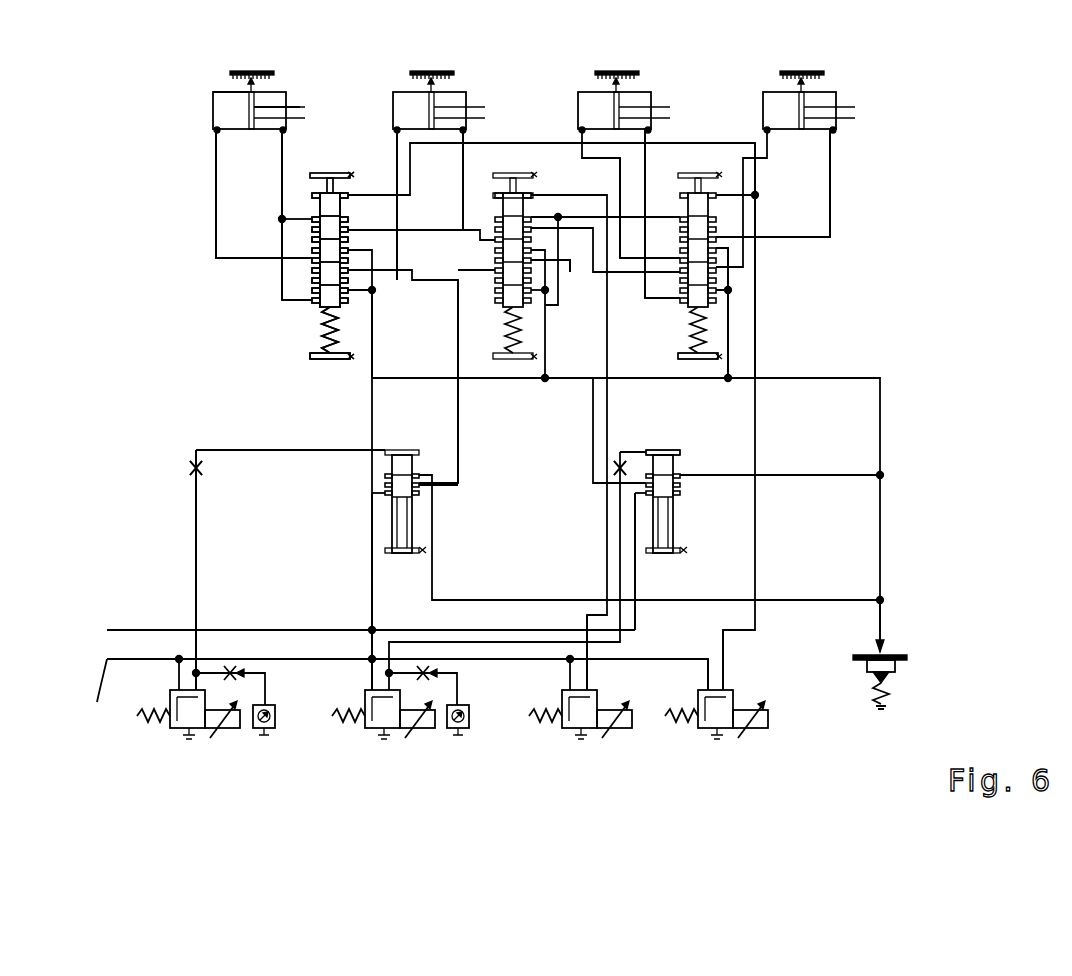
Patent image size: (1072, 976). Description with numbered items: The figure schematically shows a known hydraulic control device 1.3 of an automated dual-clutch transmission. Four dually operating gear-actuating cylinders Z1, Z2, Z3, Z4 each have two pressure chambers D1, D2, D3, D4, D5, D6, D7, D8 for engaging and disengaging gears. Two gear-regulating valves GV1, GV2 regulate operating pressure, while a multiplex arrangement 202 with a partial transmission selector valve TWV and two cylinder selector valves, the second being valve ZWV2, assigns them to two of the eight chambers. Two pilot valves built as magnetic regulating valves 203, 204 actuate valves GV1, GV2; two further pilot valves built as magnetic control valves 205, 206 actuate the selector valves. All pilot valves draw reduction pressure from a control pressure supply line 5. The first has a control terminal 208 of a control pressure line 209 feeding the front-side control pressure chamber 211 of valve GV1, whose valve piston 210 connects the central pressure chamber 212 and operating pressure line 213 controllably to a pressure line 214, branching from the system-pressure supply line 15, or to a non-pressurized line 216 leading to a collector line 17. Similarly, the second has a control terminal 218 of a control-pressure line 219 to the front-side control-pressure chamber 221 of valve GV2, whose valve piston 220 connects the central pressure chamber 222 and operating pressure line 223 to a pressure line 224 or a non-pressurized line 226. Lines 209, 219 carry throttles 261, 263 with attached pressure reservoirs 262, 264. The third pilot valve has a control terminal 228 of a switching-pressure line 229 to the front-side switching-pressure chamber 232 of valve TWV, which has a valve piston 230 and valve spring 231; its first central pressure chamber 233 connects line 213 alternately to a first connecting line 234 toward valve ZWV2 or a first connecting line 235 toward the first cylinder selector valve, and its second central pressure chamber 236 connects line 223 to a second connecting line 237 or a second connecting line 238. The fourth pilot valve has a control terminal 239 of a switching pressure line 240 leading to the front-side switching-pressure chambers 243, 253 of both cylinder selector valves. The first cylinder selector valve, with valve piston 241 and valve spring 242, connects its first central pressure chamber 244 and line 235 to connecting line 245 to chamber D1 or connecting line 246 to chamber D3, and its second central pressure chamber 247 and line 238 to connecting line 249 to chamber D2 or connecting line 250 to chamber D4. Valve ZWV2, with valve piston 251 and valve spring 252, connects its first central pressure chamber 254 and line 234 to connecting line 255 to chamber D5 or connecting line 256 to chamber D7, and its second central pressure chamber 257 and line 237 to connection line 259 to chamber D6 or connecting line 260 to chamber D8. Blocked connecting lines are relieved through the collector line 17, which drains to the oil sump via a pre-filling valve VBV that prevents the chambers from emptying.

The multiplex arrangement 202 is at (227, 304).
The hydraulic control device 1.3 is at (232, 338).
The partial transmission selector valve TWV is at (499, 265).
The second cylinder selector valve ZWV2 is at (675, 265).
The first gear-regulating valve GV1 is at (404, 516).
The second gear-regulating valve GV2 is at (666, 516).
The first gear-actuating cylinder Z1 is at (207, 87).
The second gear-actuating cylinder Z2 is at (400, 87).
The third gear-actuating cylinder Z3 is at (580, 88).
The fourth gear-actuating cylinder Z4 is at (766, 88).
The first pressure chamber of first gear-actuating cylinder D1 is at (233, 104).
The second pressure chamber of first gear-actuating cylinder D2 is at (270, 100).
The first pressure chamber of second gear-actuating cylinder D3 is at (414, 100).
The second pressure chamber of second gear-actuating cylinder D4 is at (450, 100).
The first pressure chamber of third gear-actuating cylinder D5 is at (595, 100).
The second pressure chamber of third gear-actuating cylinder D6 is at (620, 98).
The first pressure chamber of fourth gear-actuating cylinder D7 is at (788, 100).
The second pressure chamber of fourth gear-actuating cylinder D8 is at (826, 100).
The magnetic regulating valve 203 is at (173, 738).
The magnetic regulating valve 204 is at (368, 738).
The magnetic control valve 205 is at (565, 738).
The magnetic control valve 206 is at (701, 738).
The pressure reservoir 262 is at (259, 736).
The pressure reservoir 264 is at (450, 735).
The pre-filling valve VBV is at (900, 667).
The second central pressure chamber 247 is at (312, 197).
The first central pressure chamber 244 is at (312, 268).
The valve piston 241 is at (312, 293).
The valve spring 242 is at (318, 312).
The valve piston 230 is at (312, 352).
The valve spring 231 is at (372, 377).
The operating pressure line 213 is at (456, 383).
The front-side control pressure chamber 211 is at (456, 408).
The central pressure chamber 212 is at (387, 452).
The throttle 261 is at (190, 470).
The valve piston 210 is at (400, 500).
The pressure line 214 is at (373, 570).
The control pressure line 209 is at (373, 590).
The non-pressurized line 216 is at (372, 600).
The supply pressure line 15 is at (107, 632).
The control pressure supply line 5 is at (97, 702).
The first central pressure chamber 254 is at (708, 275).
The valve piston 251 is at (710, 312).
The valve spring 252 is at (708, 335).
The operating pressure line 223 is at (615, 448).
The switching-pressure line 229 is at (882, 379).
The throttle 263 is at (648, 448).
The front-side control-pressure chamber 221 is at (668, 449).
The non-pressurized line 226 is at (822, 475).
The central pressure chamber 222 is at (682, 486).
The valve piston 220 is at (668, 498).
The control-pressure line 219 is at (612, 588).
The collector line 17 is at (884, 620).
The pressure line 224 is at (633, 617).
The connecting line 245 is at (216, 135).
The front-side switching-pressure chamber 243 is at (212, 93).
The connecting line 249 is at (286, 128).
The first connecting line 235 is at (388, 268).
The connecting line 246 is at (490, 266).
The second connecting line 238 is at (300, 112).
The first central pressure chamber 233 is at (392, 268).
The connecting line 250 is at (468, 128).
The second central pressure chamber 236 is at (490, 143).
The front-side switching-pressure chamber 232 is at (495, 196).
The second connecting line 237 is at (560, 216).
The connecting line 255 is at (571, 260).
The connection line 259 is at (625, 215).
The front-side switching pressure chamber 253 is at (615, 217).
The first connecting line 234 is at (647, 200).
The second central pressure chamber 257 is at (728, 248).
The connecting line 256 is at (756, 150).
The connecting line 260 is at (832, 148).
The control terminal 208 is at (204, 652).
The control terminal 218 is at (372, 644).
The control terminal 228 is at (559, 678).
The control terminal 239 is at (740, 674).
The switching pressure line 240 is at (730, 650).